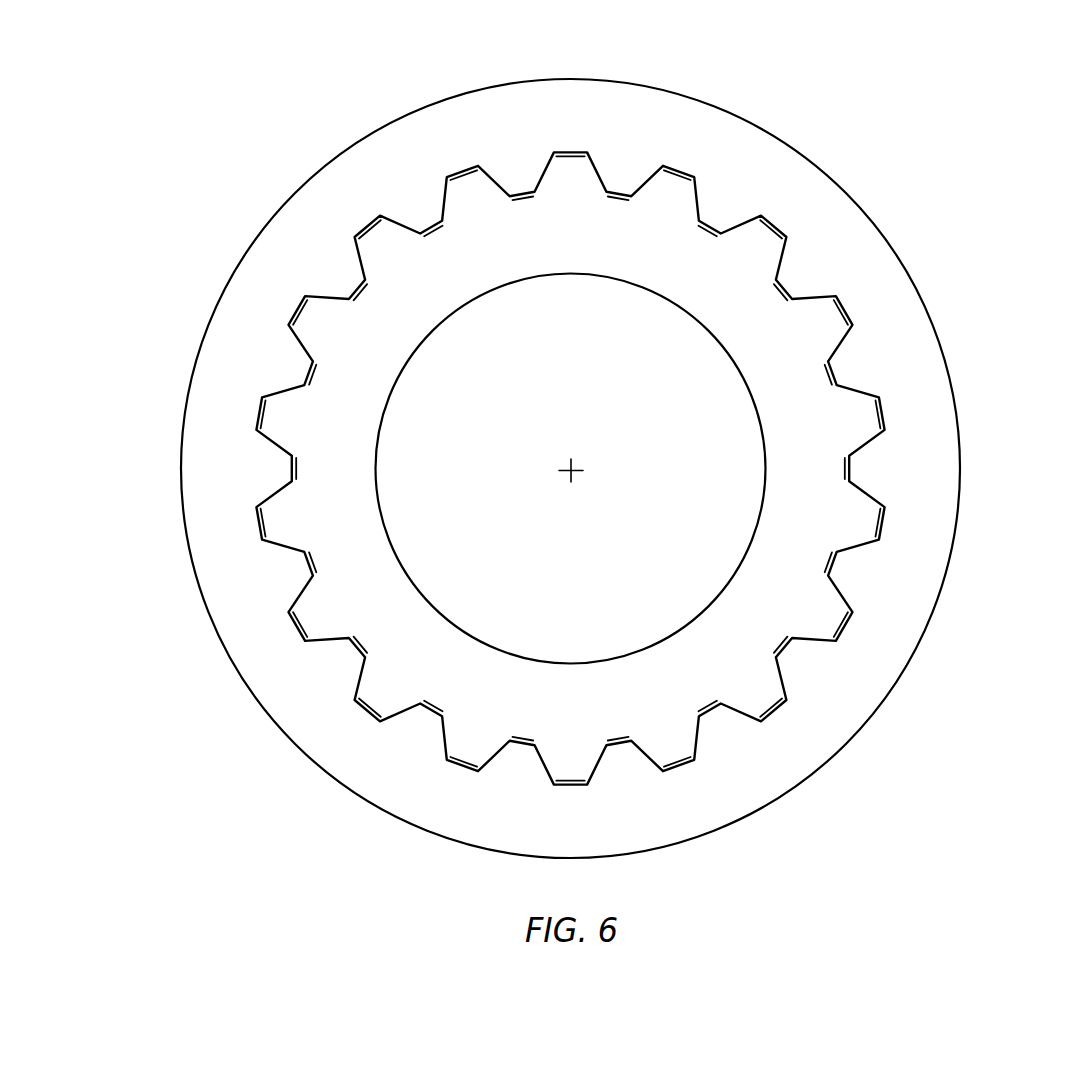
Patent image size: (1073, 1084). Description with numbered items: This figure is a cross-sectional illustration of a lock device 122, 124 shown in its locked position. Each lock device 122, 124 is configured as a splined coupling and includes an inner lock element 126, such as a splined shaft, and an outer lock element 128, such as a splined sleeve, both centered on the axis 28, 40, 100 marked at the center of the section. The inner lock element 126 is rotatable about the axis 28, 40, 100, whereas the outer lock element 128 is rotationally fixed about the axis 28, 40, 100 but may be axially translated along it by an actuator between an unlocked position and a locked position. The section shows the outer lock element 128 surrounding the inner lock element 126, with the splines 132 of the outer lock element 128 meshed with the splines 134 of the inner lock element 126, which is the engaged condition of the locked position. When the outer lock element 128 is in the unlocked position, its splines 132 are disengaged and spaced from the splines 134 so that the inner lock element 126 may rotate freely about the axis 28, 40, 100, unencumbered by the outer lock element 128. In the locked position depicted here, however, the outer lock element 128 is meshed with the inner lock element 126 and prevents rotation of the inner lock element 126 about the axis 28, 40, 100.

The lock device 122 is at (619, 456).
The lock device 124 is at (619, 456).
The outer lock element 128 is at (913, 282).
The inner lock element 126 is at (740, 377).
The splines 134 is at (838, 298).
The splines 132 is at (790, 298).
The axis 28 is at (582, 509).
The axis 40 is at (582, 509).
The axis 100 is at (574, 473).